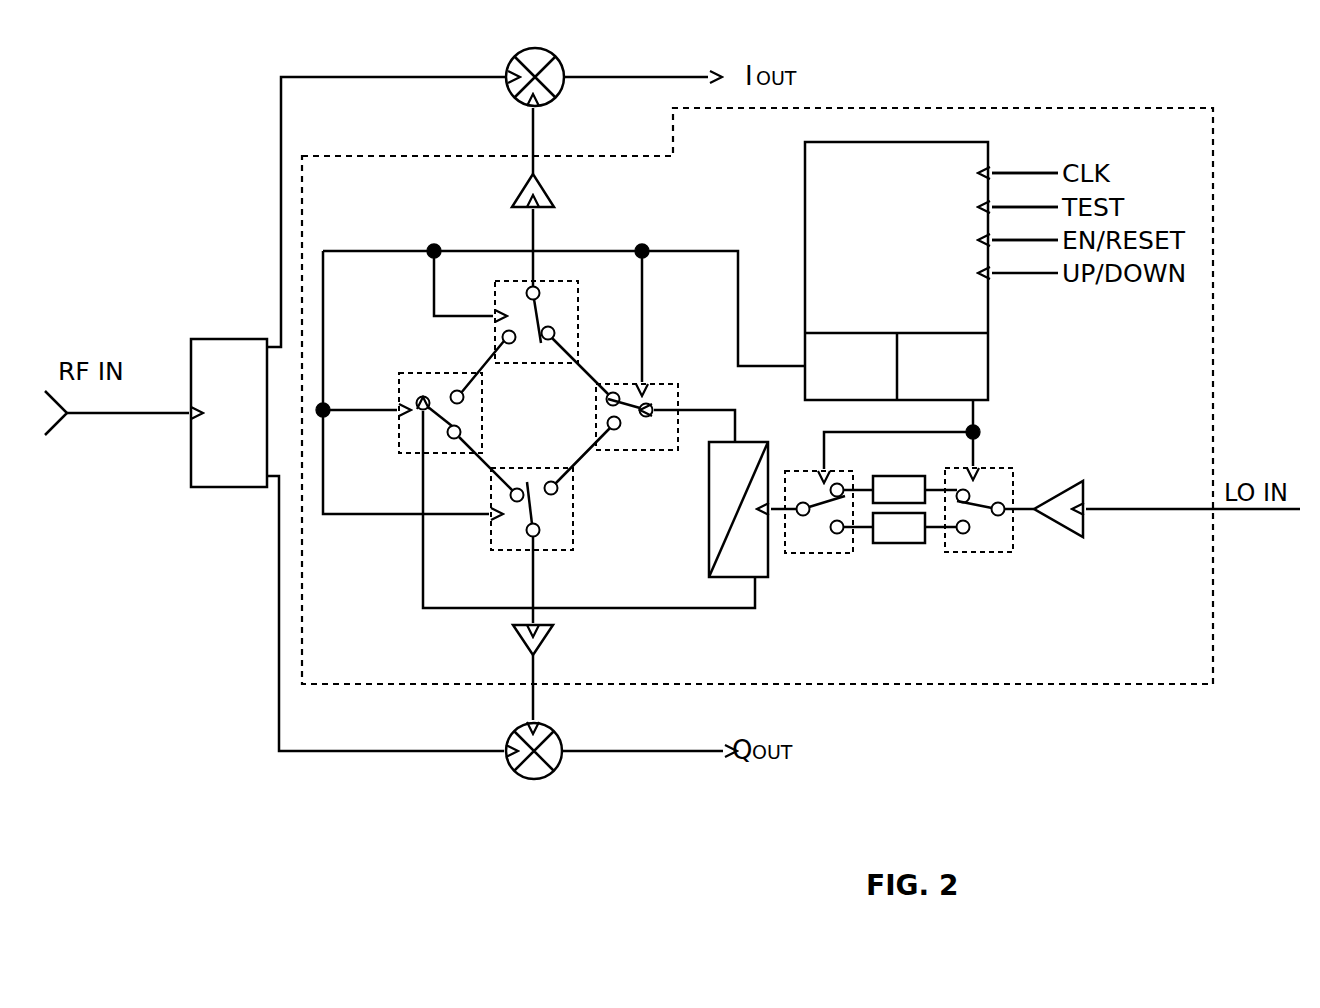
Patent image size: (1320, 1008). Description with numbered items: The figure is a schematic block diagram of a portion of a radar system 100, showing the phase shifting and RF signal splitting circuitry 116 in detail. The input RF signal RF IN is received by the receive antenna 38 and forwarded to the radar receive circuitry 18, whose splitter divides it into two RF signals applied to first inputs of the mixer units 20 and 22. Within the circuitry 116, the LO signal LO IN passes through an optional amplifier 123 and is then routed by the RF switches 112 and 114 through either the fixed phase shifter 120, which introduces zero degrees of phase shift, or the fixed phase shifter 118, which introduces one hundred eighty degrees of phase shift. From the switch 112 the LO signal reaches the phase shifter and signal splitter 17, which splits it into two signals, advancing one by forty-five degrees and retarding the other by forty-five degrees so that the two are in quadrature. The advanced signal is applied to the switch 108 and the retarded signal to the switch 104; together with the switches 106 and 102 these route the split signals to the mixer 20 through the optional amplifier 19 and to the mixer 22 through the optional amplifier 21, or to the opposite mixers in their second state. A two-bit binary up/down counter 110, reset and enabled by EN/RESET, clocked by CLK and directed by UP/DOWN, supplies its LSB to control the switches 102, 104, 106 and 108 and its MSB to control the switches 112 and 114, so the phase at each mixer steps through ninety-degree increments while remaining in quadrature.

The radar system 100 is at (181, 84).
The receive antenna 38 is at (54, 427).
The radar receive circuitry 18 is at (204, 489).
The mixer unit 20 is at (562, 92).
The mixer unit 22 is at (558, 769).
The amplifier 19 is at (550, 183).
The amplifier 21 is at (552, 630).
The switch 102 is at (574, 506).
The switch 104 is at (420, 371).
The switch 106 is at (579, 305).
The switch 108 is at (663, 377).
The two-bit binary up/down counter 110 is at (990, 312).
The phase shifter and signal splitter 17 is at (772, 562).
The RF switch 112 is at (836, 555).
The RF switch 114 is at (1000, 555).
The fixed phase shifter 118 is at (905, 545).
The fixed phase shifter 120 is at (893, 475).
The amplifier 123 is at (1090, 478).
The phase shifting and RF signal splitting circuitry 116 is at (1085, 686).